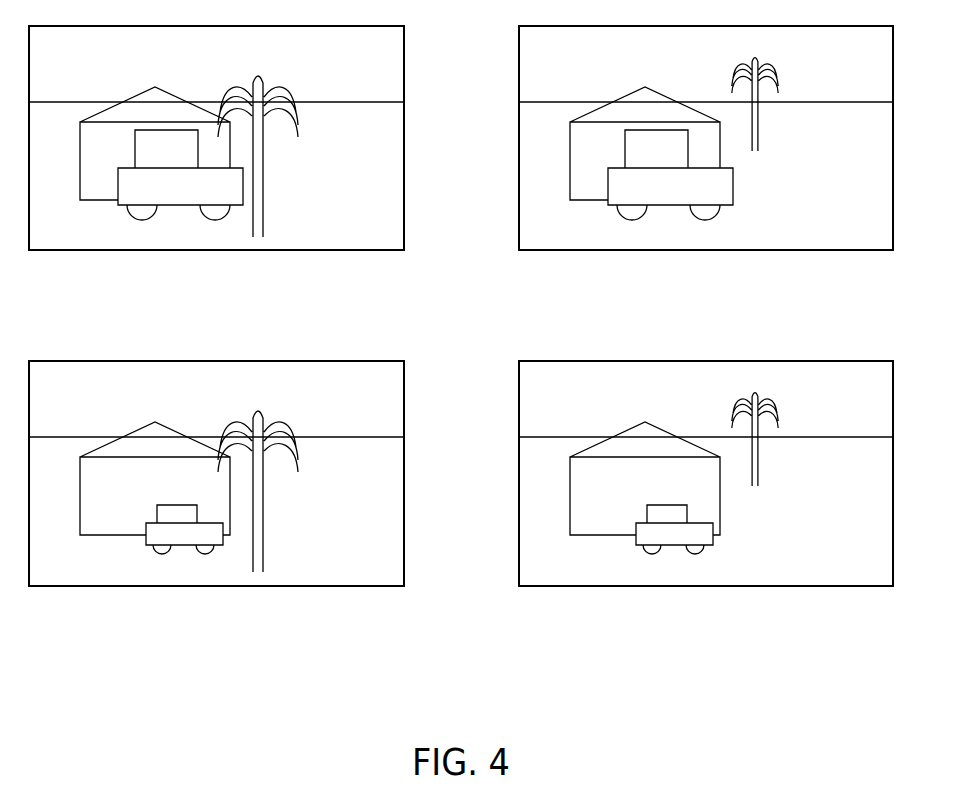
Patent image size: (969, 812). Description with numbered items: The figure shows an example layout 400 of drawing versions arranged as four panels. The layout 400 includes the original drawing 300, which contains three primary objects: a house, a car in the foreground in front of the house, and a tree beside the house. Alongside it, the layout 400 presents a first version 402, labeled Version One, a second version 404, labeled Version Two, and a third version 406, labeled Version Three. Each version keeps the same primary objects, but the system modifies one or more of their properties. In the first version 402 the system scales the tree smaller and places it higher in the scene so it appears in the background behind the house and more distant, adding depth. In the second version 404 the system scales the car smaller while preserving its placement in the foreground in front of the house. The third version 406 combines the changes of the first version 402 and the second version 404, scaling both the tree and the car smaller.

The original drawing 300 is at (216, 174).
The layout 400 is at (461, 363).
The first version 402 is at (706, 174).
The second version 404 is at (216, 510).
The third version 406 is at (706, 510).